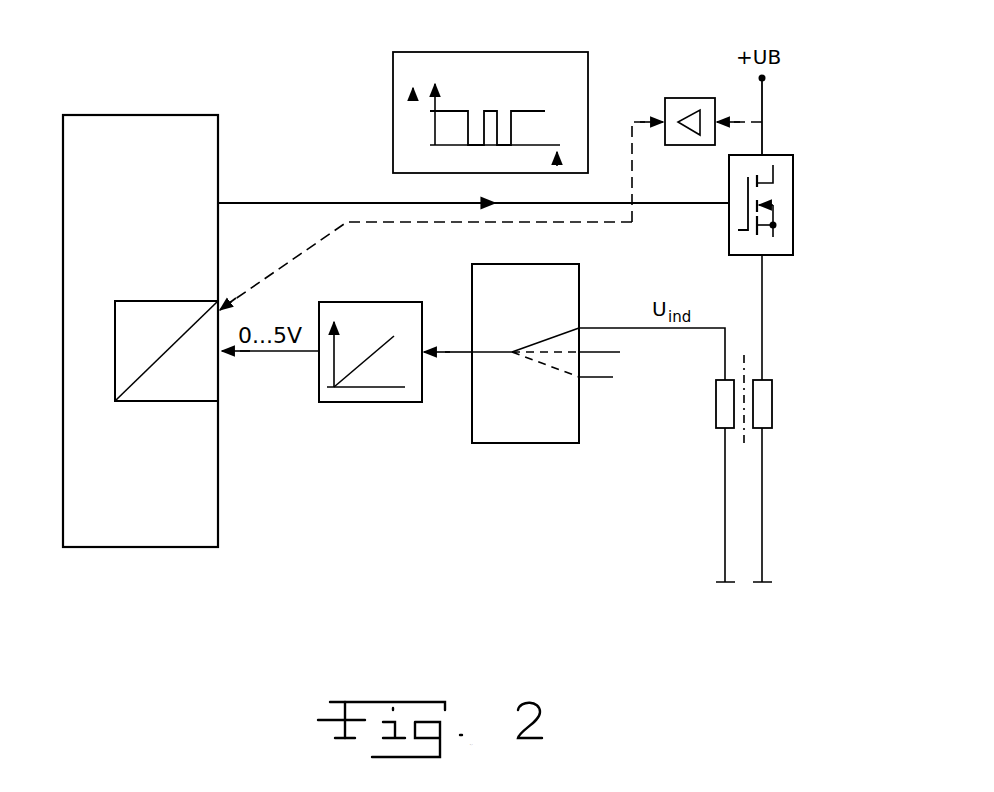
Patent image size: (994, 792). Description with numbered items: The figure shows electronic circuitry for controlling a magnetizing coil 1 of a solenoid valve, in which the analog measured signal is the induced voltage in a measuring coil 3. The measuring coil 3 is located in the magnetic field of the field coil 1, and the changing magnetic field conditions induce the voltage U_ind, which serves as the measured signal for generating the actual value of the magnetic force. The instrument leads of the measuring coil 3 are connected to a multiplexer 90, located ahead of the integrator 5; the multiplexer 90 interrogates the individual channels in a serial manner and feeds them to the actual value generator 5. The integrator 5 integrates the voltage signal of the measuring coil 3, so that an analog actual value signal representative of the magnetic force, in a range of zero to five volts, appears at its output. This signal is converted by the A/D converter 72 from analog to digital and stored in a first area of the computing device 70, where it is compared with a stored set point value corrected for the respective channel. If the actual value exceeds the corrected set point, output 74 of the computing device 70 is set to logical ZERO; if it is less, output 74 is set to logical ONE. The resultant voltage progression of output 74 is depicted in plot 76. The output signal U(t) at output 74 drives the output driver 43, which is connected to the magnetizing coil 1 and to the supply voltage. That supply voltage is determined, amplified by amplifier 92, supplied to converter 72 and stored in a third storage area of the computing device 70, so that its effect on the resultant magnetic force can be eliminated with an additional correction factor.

The computing device 70 is at (207, 529).
The A/D converter 72 is at (207, 388).
The output 74 is at (218, 203).
The plot 76 is at (510, 62).
The amplifier 92 is at (683, 98).
The output driver 43 is at (773, 157).
The integrator 5 is at (365, 402).
The multiplexer 90 is at (527, 443).
The measuring coil 3 is at (716, 398).
The magnetizing coil 1 is at (772, 404).